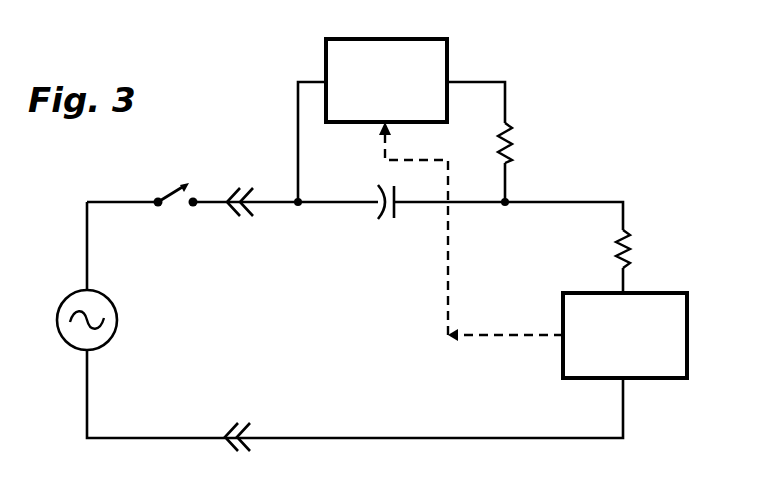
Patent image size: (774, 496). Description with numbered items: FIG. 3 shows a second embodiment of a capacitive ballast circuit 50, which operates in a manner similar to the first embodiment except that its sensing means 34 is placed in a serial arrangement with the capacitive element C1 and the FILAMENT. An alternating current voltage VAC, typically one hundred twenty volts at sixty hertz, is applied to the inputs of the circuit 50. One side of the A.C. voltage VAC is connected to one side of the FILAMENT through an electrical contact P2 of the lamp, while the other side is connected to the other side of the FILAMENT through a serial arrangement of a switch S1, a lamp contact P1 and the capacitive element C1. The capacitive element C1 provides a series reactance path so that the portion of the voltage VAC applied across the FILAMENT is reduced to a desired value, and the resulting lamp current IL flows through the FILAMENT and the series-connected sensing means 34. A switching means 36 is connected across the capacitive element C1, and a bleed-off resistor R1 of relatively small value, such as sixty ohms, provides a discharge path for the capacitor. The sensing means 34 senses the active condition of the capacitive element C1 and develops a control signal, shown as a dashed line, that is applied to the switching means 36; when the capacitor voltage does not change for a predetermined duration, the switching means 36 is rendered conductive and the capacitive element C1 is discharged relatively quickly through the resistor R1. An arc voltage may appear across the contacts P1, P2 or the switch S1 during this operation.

The switching means 36 is at (447, 40).
The sensing means 34 is at (687, 293).
The ballast circuit 50 is at (613, 108).
The switch S1 is at (186, 181).
The contact P1 is at (250, 217).
The contact P2 is at (247, 450).
The capacitive element C1 is at (391, 219).
The bleed-off resistor R1 is at (513, 135).
The filament FILAMENT is at (690, 235).
The lamp current IL is at (328, 204).
The A.C. voltage VAC is at (117, 308).